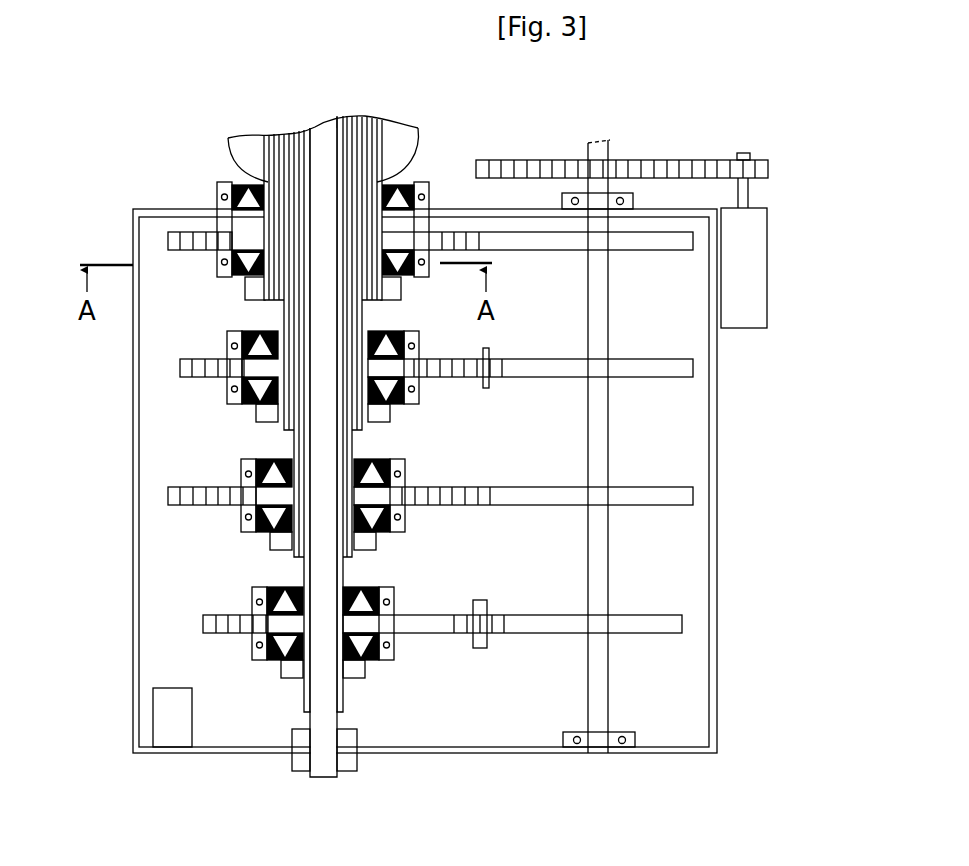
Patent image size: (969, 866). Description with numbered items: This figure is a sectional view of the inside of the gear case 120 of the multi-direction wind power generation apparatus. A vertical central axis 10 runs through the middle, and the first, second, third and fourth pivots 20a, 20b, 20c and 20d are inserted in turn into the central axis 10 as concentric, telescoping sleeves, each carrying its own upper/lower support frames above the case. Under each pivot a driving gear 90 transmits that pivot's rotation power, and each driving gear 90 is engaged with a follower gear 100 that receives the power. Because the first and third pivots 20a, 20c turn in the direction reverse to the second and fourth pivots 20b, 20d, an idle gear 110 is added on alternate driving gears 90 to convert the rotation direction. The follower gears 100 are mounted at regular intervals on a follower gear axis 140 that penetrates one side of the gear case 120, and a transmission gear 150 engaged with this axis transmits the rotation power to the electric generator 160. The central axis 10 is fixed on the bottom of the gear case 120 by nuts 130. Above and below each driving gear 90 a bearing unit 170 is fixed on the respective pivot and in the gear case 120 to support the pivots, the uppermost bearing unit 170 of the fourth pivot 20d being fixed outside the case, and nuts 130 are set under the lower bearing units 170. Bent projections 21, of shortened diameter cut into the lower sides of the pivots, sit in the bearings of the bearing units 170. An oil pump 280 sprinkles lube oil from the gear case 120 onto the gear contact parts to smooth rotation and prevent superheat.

The central axis 10 is at (325, 755).
The first pivot 20a is at (304, 706).
The second pivot 20b is at (294, 557).
The third pivot 20c is at (284, 428).
The fourth pivot 20d is at (264, 300).
The bent projection 21 is at (228, 138).
The driving gear 90 is at (180, 367).
The follower gear 100 is at (693, 367).
The idle gear 110 is at (490, 372).
The gear case 120 is at (140, 705).
The nut 130 is at (240, 282).
The follower gear axis 140 is at (599, 427).
The transmission gear 150 is at (688, 170).
The electric generator 160 is at (755, 267).
The bearing unit 170 is at (217, 270).
The oil pump 280 is at (173, 750).